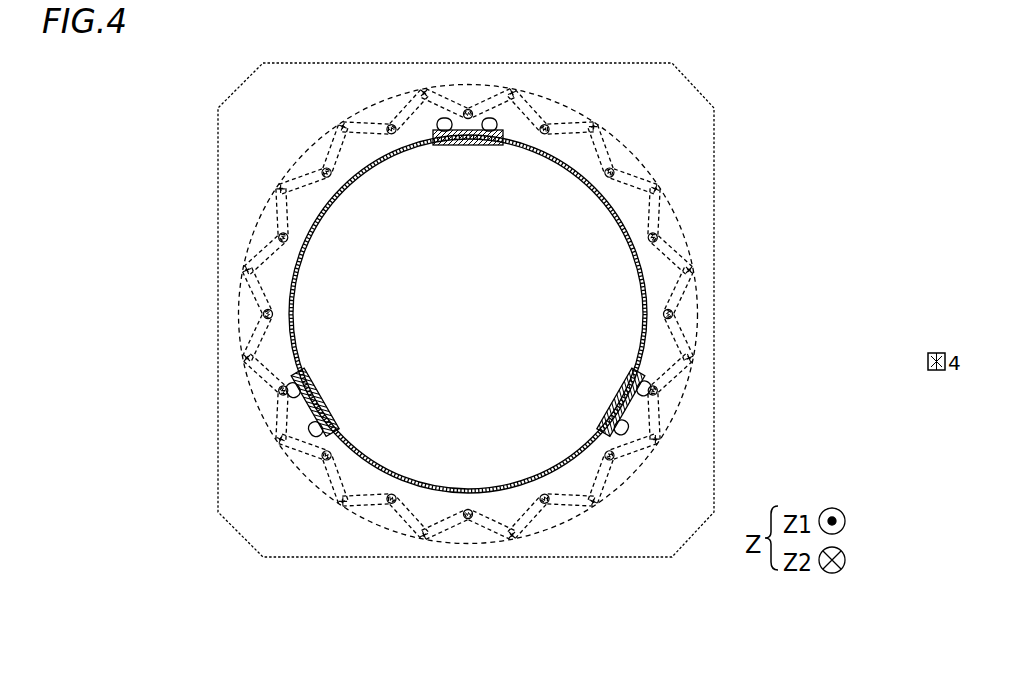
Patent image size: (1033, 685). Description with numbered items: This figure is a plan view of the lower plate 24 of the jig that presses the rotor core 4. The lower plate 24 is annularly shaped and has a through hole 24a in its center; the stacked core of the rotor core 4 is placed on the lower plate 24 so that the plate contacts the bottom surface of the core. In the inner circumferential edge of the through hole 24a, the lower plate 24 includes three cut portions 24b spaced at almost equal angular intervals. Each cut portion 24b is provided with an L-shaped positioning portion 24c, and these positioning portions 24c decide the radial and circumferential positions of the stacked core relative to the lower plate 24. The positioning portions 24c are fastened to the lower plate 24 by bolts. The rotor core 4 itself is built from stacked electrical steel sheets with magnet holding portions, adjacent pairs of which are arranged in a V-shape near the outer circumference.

The rotor core 4 is at (622, 138).
The lower plate 24 is at (218, 126).
The through hole 24a is at (387, 173).
The cut portion 24b is at (446, 118).
The positioning portion 24c is at (490, 147).